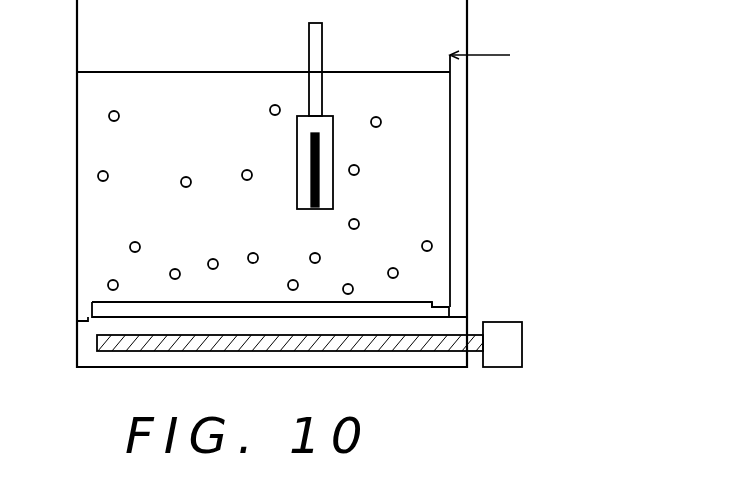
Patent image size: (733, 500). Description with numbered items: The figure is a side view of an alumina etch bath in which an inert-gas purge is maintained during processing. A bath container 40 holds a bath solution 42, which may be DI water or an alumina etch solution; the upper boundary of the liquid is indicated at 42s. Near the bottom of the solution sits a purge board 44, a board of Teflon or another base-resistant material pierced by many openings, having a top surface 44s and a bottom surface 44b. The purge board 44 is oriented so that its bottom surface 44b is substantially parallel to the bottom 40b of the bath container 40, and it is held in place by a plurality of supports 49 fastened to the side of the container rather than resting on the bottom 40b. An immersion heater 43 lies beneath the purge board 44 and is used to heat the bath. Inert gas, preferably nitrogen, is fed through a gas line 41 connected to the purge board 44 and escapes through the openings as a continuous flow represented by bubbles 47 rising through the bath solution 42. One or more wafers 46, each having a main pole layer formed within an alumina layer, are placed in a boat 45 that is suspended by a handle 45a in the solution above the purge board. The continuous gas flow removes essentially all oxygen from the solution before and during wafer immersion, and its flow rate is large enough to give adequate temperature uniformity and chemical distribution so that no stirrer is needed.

The bath container 40 is at (77, 42).
The bottom of the bath container 40b is at (97, 367).
The gas line 41 is at (450, 168).
The bath solution 42 is at (376, 80).
The solder surface 42s is at (164, 72).
The immersion heater 43 is at (97, 343).
The purge board 44 is at (110, 311).
The top surface of the purge board 44s is at (432, 301).
The bottom surface of the purge board 44b is at (428, 320).
The boat 45 is at (297, 197).
The handle 45a is at (309, 47).
The wafer 46 is at (297, 147).
The bubbles 47 is at (181, 184).
The supports 49 is at (77, 321).